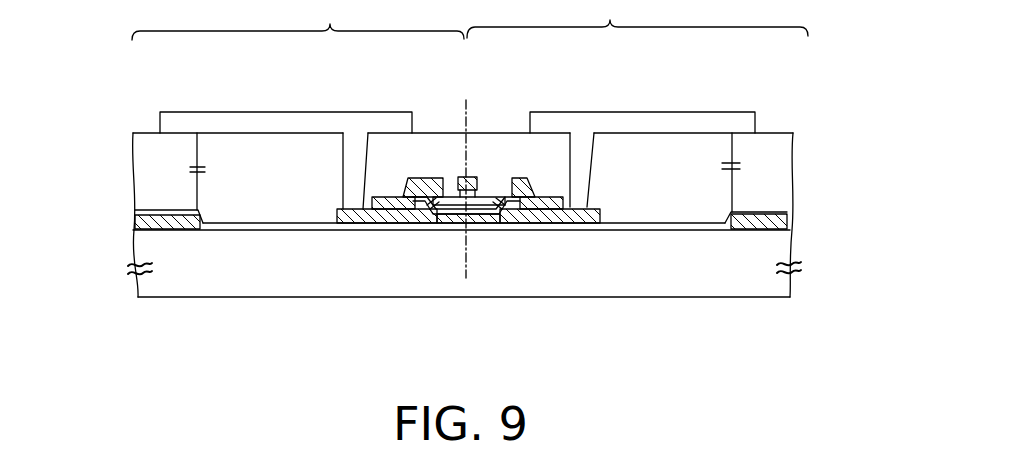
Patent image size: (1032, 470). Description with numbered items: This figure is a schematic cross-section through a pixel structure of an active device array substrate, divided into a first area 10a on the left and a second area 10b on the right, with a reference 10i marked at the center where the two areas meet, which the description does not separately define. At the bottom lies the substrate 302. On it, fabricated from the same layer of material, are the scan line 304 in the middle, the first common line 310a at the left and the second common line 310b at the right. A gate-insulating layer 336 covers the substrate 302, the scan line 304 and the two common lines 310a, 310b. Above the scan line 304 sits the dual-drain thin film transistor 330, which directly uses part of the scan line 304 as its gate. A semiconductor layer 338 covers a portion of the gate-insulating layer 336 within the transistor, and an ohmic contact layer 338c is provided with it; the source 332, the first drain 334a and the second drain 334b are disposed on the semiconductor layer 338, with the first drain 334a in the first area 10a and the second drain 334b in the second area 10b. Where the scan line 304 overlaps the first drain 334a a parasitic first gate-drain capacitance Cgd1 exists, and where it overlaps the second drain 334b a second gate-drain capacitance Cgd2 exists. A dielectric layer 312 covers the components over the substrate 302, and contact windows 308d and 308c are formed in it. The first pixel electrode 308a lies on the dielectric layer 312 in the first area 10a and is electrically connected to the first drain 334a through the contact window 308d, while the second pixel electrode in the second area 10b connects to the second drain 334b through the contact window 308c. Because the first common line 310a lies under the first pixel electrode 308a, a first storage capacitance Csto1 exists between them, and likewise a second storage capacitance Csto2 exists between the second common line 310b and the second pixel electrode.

The first area 10a is at (298, 20).
The second area 10b is at (637, 19).
The boundary between sub-pixel regions 10i is at (466, 97).
The substrate 302 is at (776, 283).
The scan line 304 is at (453, 225).
The first pixel electrode 308a is at (200, 122).
The contact window 308c is at (583, 167).
The contact window 308d is at (363, 167).
The first common line 310a is at (172, 230).
The second common line 310b is at (745, 224).
The dielectric layer 312 is at (782, 185).
The dual-drain thin film transistor 330 is at (528, 244).
The source 332 is at (472, 176).
The first drain 334a is at (377, 225).
The second drain 334b is at (573, 225).
The gate-insulating layer 336 is at (320, 225).
The semiconductor layer 338 is at (480, 225).
The ohmic contact layer 338c is at (437, 177).
The first gate-drain capacitance Cgd1 is at (423, 212).
The second gate-drain capacitance Cgd2 is at (509, 212).
The first storage capacitance Csto1 is at (183, 170).
The second storage capacitance Csto2 is at (746, 168).